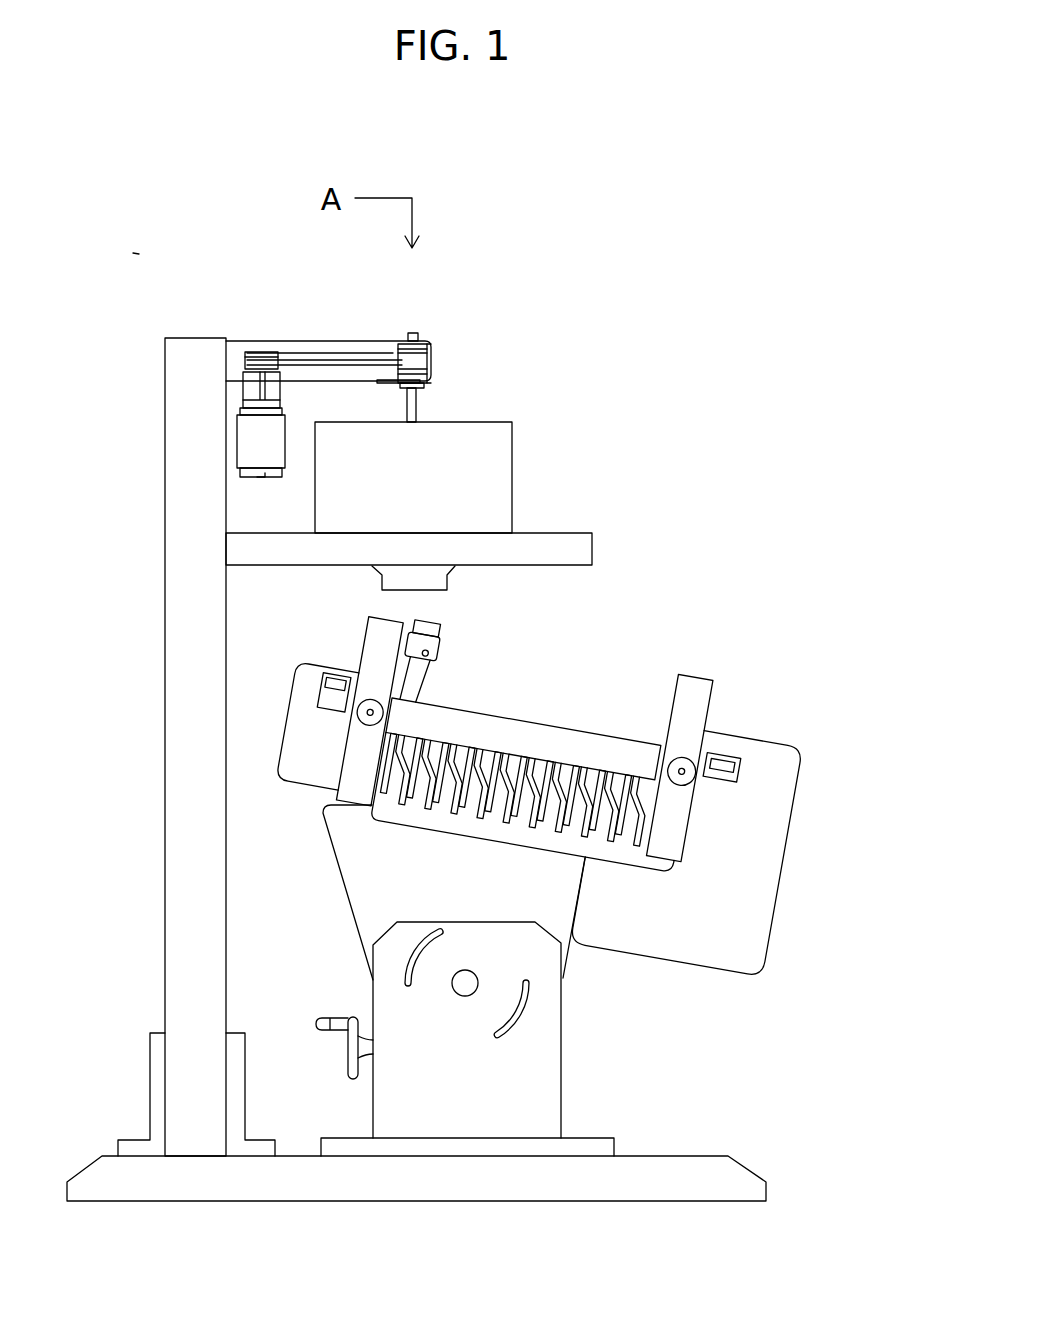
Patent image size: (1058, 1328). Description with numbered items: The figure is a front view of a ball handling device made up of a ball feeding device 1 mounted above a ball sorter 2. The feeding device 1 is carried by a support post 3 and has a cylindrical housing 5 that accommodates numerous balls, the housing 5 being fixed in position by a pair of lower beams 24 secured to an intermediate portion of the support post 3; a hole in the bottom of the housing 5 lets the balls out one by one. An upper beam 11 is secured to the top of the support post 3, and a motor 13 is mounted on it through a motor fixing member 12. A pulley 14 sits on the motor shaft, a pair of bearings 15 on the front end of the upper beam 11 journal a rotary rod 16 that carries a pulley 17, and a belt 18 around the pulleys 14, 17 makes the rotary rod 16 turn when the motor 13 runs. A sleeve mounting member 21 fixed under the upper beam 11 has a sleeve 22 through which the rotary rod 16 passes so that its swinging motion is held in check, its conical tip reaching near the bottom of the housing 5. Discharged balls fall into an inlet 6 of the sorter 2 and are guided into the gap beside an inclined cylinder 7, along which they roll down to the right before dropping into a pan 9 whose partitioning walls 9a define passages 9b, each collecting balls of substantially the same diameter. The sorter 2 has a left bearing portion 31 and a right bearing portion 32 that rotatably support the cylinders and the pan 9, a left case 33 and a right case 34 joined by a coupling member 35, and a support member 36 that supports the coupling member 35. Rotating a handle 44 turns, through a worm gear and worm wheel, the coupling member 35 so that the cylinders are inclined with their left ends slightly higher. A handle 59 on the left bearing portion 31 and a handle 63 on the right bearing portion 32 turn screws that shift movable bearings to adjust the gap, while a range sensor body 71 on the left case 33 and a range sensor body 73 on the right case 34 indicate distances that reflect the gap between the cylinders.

The ball feeding device 1 is at (645, 489).
The ball sorter 2 is at (770, 695).
The support post 3 is at (165, 692).
The housing 5 is at (515, 476).
The inlet 6 is at (441, 628).
The cylinder 7 is at (545, 738).
The pan 9 is at (613, 785).
The partitioning wall 9a is at (580, 763).
The passage 9b is at (450, 756).
The upper beam 11 is at (348, 342).
The motor fixing member 12 is at (281, 395).
The motor 13 is at (287, 448).
The pulley 14 is at (250, 354).
The bearings 15 is at (431, 349).
The rotary rod 16 is at (412, 334).
The pulley 17 is at (397, 357).
The belt 18 is at (293, 355).
The sleeve mounting member 21 is at (388, 384).
The sleeve 22 is at (421, 403).
The lower beams 24 is at (592, 551).
The left bearing portion 31 is at (385, 618).
The right bearing portion 32 is at (695, 677).
The left case 33 is at (303, 661).
The right case 34 is at (803, 747).
The coupling member 35 is at (335, 867).
The support member 36 is at (562, 1057).
The handle 44 is at (347, 1052).
The handle 59 is at (367, 721).
The handle 63 is at (684, 781).
The range sensor body 71 is at (322, 688).
The range sensor body 73 is at (738, 776).